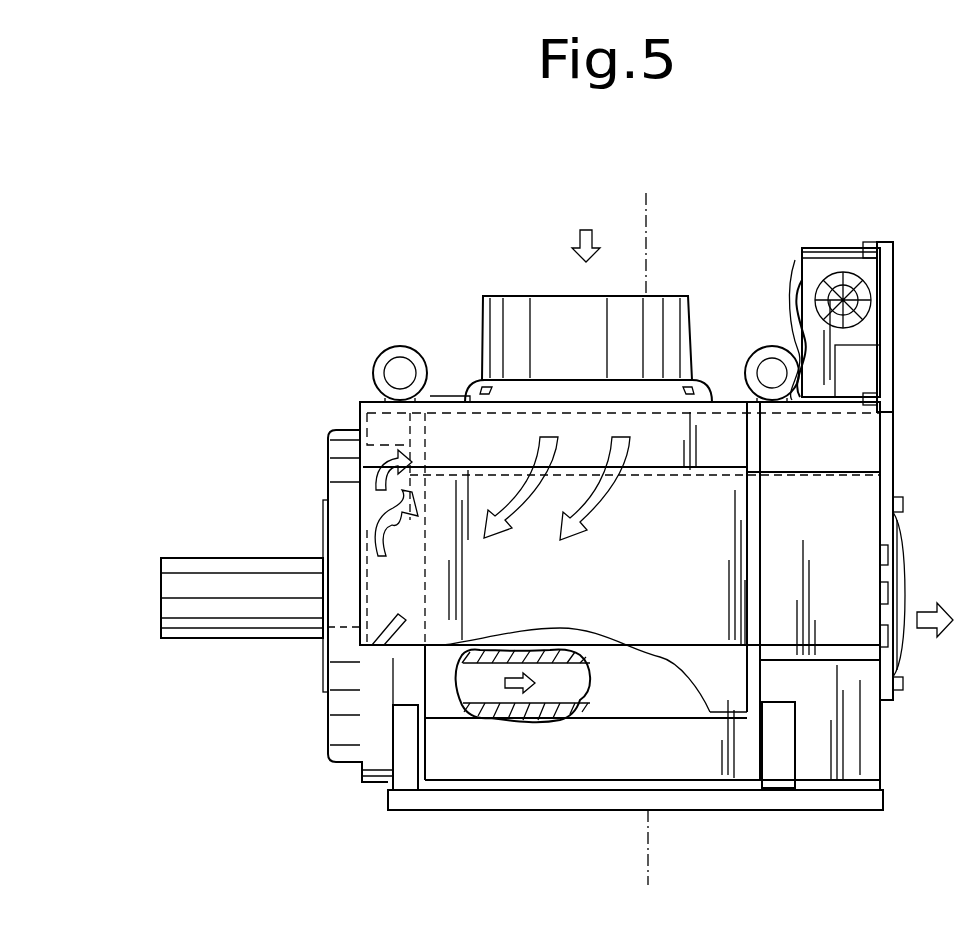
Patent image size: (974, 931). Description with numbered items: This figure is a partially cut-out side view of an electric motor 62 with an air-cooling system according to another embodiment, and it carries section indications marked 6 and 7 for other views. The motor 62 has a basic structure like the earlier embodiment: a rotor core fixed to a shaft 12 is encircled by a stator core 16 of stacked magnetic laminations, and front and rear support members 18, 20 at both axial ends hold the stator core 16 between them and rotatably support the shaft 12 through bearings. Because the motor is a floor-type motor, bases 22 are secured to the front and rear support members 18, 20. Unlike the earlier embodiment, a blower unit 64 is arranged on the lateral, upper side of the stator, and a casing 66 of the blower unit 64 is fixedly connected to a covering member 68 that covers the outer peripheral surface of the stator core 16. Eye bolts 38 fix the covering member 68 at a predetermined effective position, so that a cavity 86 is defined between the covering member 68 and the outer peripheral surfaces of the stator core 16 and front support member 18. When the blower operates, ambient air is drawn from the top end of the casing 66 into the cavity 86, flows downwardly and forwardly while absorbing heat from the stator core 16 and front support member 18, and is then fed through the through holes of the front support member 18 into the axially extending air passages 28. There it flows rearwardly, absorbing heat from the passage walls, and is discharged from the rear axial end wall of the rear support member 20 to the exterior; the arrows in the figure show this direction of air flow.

The shaft 12 is at (222, 613).
The front support member 18 is at (358, 703).
The electric motor 62 is at (343, 310).
The cavity 86 is at (358, 402).
The eye bolts 38 is at (372, 375).
The covering member 68 is at (447, 400).
The casing 66 is at (508, 306).
The blower unit 64 is at (698, 316).
The air passages 28 is at (480, 687).
The stator core 16 is at (580, 765).
The bases 22 is at (843, 797).
The rear support member 20 is at (855, 698).
The section line 6 is at (96, 605).
The section line 7 is at (660, 200).